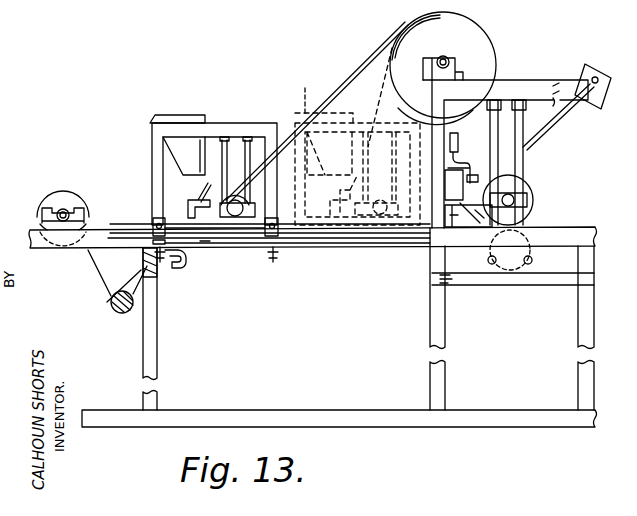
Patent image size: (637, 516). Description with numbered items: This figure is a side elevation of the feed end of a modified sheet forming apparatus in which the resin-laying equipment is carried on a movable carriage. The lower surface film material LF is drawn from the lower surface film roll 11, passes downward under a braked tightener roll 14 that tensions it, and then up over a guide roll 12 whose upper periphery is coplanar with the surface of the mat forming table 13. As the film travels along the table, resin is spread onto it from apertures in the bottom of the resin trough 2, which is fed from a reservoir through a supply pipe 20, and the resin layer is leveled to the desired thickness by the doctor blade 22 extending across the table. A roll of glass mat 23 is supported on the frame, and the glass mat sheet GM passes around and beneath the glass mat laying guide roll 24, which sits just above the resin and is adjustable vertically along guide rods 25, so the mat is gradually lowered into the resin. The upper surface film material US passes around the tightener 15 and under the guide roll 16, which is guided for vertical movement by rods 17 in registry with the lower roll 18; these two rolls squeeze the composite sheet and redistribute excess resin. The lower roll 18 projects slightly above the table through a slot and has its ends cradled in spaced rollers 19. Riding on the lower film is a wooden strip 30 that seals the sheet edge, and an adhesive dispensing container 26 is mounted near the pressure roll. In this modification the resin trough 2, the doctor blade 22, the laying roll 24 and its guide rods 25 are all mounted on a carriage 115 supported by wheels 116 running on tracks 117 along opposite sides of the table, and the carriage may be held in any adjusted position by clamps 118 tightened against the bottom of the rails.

The resin trough 2 is at (172, 117).
The lower surface film roll 11 is at (63, 193).
The guide roll 12 is at (178, 268).
The mat forming table 13 is at (183, 232).
The tightener roll 14 is at (114, 305).
The tightener 15 is at (606, 68).
The guide roll 16 is at (530, 188).
The guide rods 17 is at (497, 118).
The lower roll 18 is at (530, 252).
The spaced rollers 19 is at (488, 258).
The supply pipe 20 is at (453, 133).
The doctor blade 22 is at (183, 232).
The roll of glass mat 23 is at (476, 37).
The glass mat laying guide roll 24 is at (240, 224).
The guide rods 25 is at (232, 190).
The adhesive dispensing container 26 is at (455, 142).
The strip 30 is at (463, 222).
The carriage 115 is at (155, 148).
The wheels 116 is at (153, 225).
The tracks 117 is at (213, 237).
The clamps 118 is at (157, 262).
The glass mat sheet GM is at (360, 62).
The lower surface film material LF is at (97, 268).
The upper surface film material US is at (562, 105).